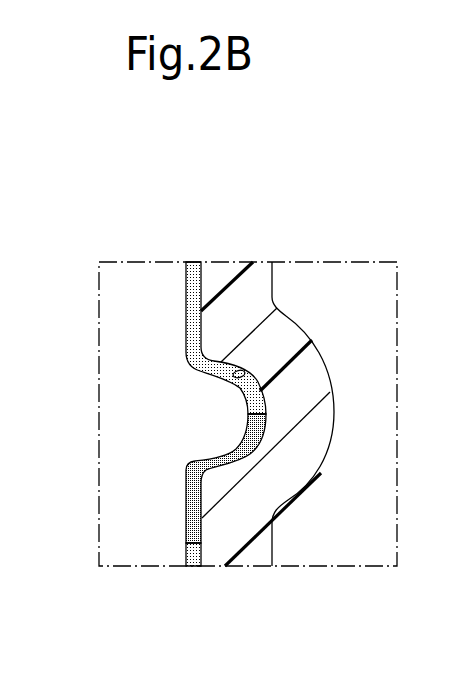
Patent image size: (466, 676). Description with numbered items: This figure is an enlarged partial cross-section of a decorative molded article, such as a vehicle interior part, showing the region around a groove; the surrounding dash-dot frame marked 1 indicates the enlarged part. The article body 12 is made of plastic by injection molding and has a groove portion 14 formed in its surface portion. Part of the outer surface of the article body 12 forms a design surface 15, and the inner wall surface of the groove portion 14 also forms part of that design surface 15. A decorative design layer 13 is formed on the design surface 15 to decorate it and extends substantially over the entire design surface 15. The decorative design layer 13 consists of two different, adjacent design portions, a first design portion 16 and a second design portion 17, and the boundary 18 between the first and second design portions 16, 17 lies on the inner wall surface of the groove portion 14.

The electronic component 1 is at (201, 377).
The article body 12 is at (331, 447).
The decorative design layer 13 is at (134, 402).
The groove portion 14 is at (247, 371).
The design surface 15 is at (186, 544).
The first design portion 16 is at (187, 363).
The second design portion 17 is at (187, 464).
The boundary 18 is at (266, 414).